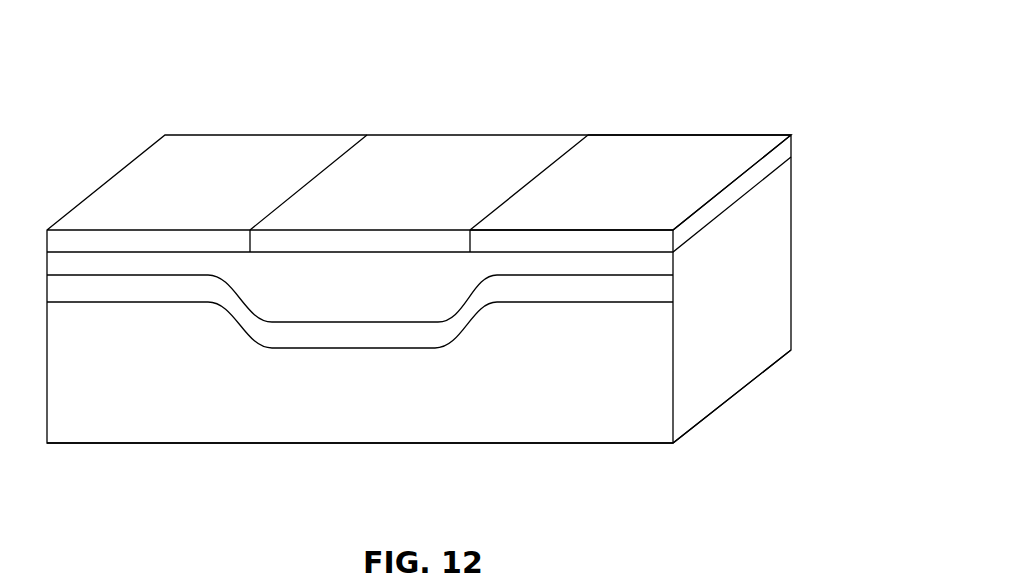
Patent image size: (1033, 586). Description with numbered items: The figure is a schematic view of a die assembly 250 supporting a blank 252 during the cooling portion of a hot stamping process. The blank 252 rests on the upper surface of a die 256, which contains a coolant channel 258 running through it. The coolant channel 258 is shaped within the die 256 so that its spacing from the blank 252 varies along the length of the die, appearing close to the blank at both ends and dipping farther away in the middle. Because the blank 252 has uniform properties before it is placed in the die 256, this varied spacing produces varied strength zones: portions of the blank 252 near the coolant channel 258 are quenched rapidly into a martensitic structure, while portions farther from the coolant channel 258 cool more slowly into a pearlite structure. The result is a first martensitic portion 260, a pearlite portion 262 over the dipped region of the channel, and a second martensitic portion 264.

The die assembly 250 is at (592, 48).
The blank 252 is at (692, 236).
The die 256 is at (670, 452).
The coolant channel 258 is at (383, 338).
The first martensitic portion 260 is at (196, 155).
The pearlite portion 262 is at (441, 155).
The second martensitic portion 264 is at (720, 155).